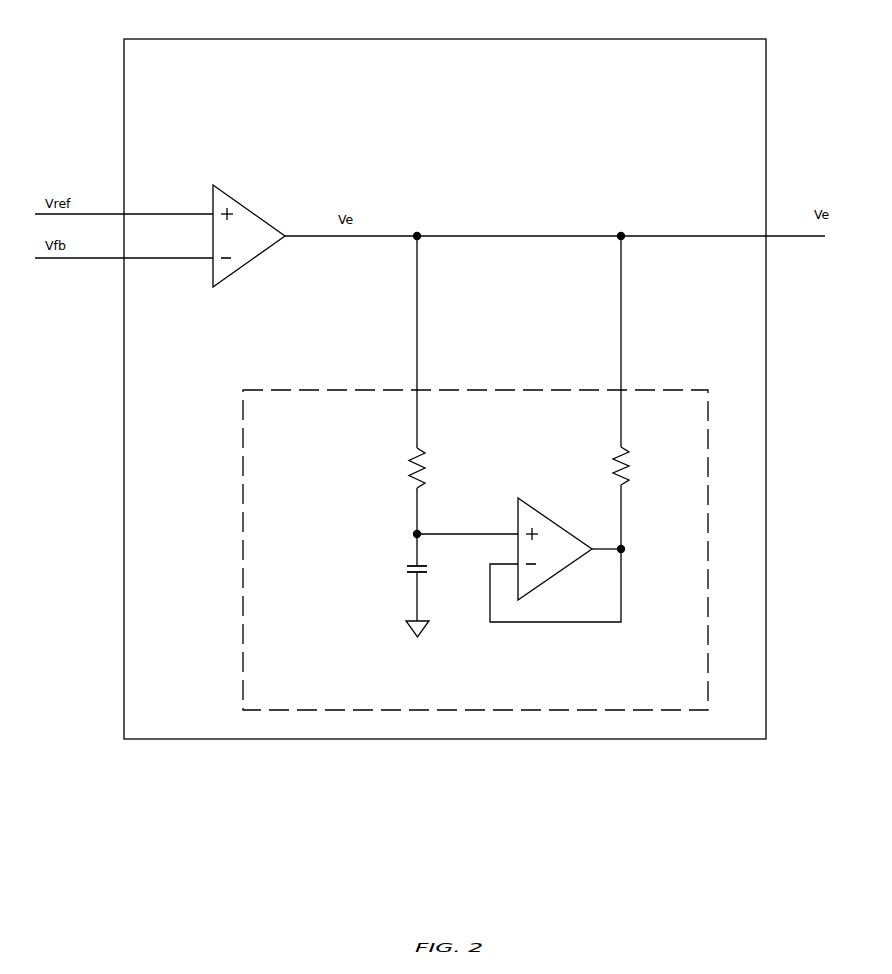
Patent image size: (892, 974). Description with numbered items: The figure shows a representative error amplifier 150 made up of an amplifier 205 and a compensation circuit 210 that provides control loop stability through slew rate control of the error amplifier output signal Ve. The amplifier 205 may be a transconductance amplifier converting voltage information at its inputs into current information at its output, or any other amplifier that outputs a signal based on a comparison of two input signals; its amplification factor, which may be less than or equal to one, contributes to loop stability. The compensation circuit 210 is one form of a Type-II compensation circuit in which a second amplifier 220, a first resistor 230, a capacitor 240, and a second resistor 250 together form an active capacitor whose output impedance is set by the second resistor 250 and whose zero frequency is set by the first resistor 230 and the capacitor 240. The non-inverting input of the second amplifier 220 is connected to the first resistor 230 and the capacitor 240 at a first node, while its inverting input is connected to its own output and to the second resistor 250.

The error amplifier 150 is at (445, 389).
The amplifier 205 is at (252, 214).
The compensation circuit 210 is at (475, 473).
The amplifier 220 is at (562, 523).
The resistor 230 is at (403, 468).
The capacitor 240 is at (403, 575).
The resistor 250 is at (608, 453).